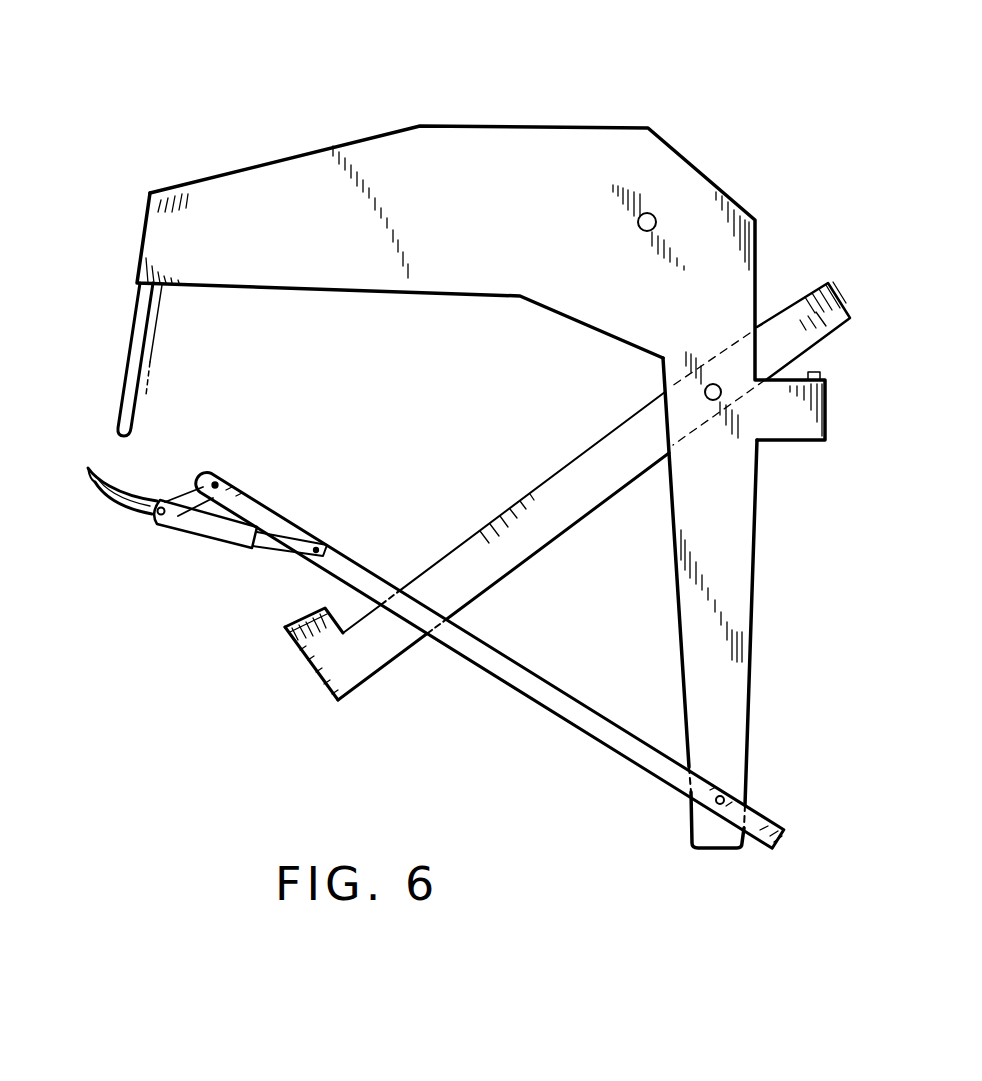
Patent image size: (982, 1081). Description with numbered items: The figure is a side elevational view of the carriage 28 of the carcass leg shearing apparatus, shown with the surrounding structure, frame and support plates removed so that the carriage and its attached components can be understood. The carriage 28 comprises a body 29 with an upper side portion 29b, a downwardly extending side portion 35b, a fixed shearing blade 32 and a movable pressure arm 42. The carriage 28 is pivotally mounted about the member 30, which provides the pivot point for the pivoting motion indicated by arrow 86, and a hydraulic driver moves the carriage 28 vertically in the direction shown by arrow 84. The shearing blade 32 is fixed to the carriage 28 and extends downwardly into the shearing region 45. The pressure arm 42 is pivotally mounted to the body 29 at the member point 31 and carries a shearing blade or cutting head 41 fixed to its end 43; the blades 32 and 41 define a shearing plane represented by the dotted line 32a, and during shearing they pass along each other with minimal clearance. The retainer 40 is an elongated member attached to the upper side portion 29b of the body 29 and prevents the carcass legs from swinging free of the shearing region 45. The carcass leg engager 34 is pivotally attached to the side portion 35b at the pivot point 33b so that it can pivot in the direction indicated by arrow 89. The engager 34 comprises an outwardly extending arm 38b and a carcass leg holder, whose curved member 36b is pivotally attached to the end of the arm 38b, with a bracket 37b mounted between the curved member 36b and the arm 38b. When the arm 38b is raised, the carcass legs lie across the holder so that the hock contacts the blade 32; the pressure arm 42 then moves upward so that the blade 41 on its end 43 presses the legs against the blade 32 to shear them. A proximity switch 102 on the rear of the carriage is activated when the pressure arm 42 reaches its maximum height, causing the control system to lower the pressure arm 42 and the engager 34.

The carriage 28 is at (452, 95).
The body 29 is at (593, 130).
The upper side portion 29b is at (468, 219).
The member 30 is at (655, 216).
The member point 31 is at (706, 392).
The shearing blade 32 is at (162, 337).
The dotted line 32a is at (150, 382).
The pivot point 33b is at (722, 797).
The carcass leg engager 34 is at (443, 637).
The side portion 35b is at (723, 697).
The curved member 36b is at (117, 498).
The bracket 37b is at (207, 528).
The arm 38b is at (487, 675).
The retainer 40 is at (127, 403).
The shearing blade or cutting head 41 is at (300, 613).
The pressure arm 42 is at (537, 520).
The end 43 is at (310, 665).
The shearing region 45 is at (173, 439).
The arrow 84 is at (52, 292).
The arrow 86 is at (133, 622).
The arrow 89 is at (248, 450).
The proximity switch 102 is at (818, 377).